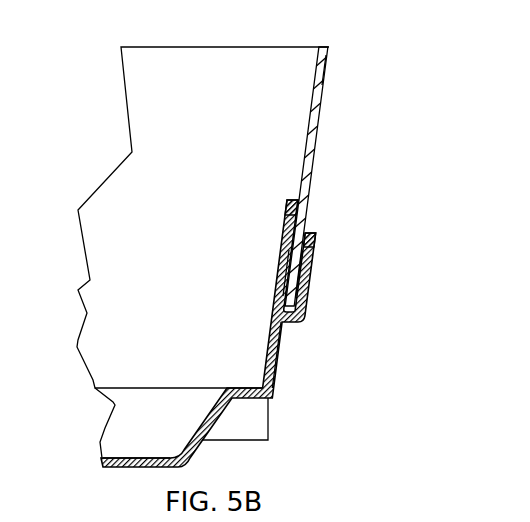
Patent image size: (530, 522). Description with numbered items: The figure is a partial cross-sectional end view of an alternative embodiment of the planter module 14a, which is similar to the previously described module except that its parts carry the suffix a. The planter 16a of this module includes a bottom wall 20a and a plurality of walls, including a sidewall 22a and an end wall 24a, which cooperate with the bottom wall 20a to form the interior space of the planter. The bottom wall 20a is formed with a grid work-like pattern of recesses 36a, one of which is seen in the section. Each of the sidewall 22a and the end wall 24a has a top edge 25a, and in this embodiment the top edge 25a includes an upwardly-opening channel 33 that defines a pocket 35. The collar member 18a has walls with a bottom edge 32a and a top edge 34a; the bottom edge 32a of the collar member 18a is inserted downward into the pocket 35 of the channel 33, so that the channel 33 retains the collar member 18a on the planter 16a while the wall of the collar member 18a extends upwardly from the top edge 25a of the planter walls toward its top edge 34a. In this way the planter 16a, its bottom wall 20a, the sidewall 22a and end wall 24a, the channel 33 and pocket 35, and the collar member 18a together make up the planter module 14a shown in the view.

The planter module 14a is at (76, 68).
The end wall 24a is at (197, 65).
The collar member 18a is at (334, 123).
The top edge 34a is at (323, 61).
The top edge 25a is at (293, 198).
The pocket 35 is at (306, 232).
The sidewall 22a is at (236, 300).
The bottom edge 32a is at (282, 268).
The upwardly-opening channel 33 is at (296, 268).
The planter 16a is at (295, 354).
The bottom wall 20a is at (233, 387).
The recess 36a is at (132, 458).